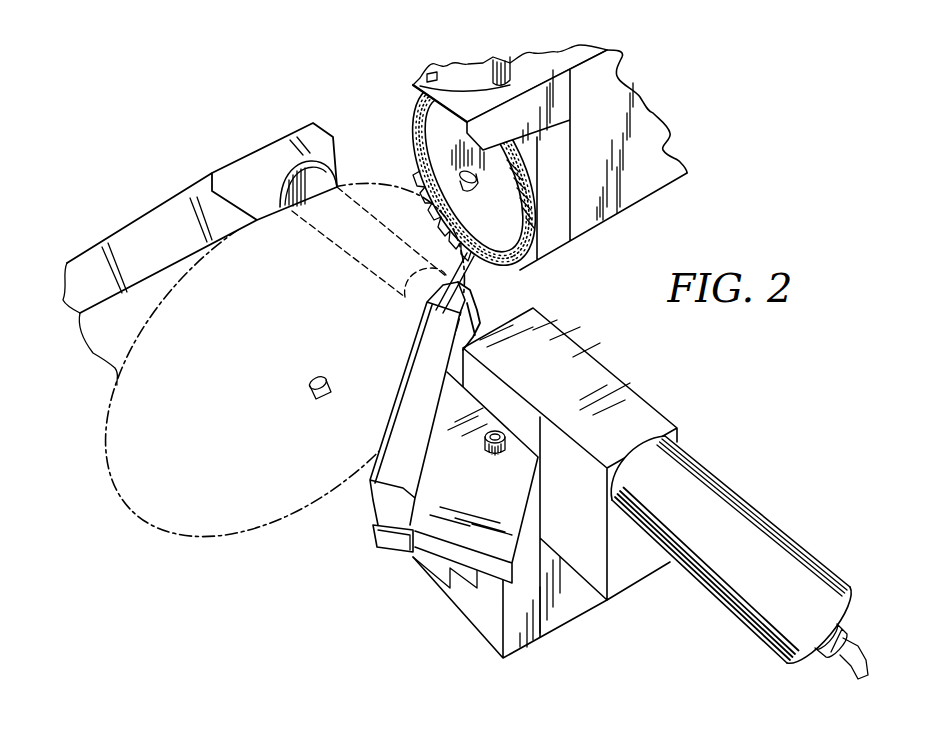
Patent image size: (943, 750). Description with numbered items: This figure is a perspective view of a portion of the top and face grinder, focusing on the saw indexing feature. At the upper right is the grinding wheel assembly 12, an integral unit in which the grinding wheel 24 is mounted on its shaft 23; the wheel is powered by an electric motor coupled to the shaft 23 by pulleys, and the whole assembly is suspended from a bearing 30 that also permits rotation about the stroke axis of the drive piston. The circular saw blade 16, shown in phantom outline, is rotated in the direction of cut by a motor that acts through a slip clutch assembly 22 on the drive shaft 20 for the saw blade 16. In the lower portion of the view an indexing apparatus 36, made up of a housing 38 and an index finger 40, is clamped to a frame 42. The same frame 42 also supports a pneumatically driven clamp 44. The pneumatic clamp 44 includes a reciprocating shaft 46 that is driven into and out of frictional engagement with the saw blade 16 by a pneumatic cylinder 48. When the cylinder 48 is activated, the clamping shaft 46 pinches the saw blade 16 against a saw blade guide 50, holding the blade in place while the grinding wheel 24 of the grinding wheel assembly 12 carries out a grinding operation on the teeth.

The grinding wheel assembly 12 is at (668, 138).
The circular saw blade 16 is at (108, 478).
The drive shaft 20 is at (317, 402).
The slip clutch assembly 22 is at (151, 220).
The shaft 23 is at (472, 186).
The grinding wheel 24 is at (540, 250).
The bearing 30 is at (481, 73).
The indexing apparatus 36 is at (393, 553).
The housing 38 is at (410, 440).
The index finger 40 is at (453, 310).
The frame 42 is at (570, 593).
The pneumatic clamp 44 is at (640, 407).
The reciprocating shaft 46 is at (478, 307).
The pneumatic cylinder 48 is at (757, 511).
The saw blade guide 50 is at (337, 186).